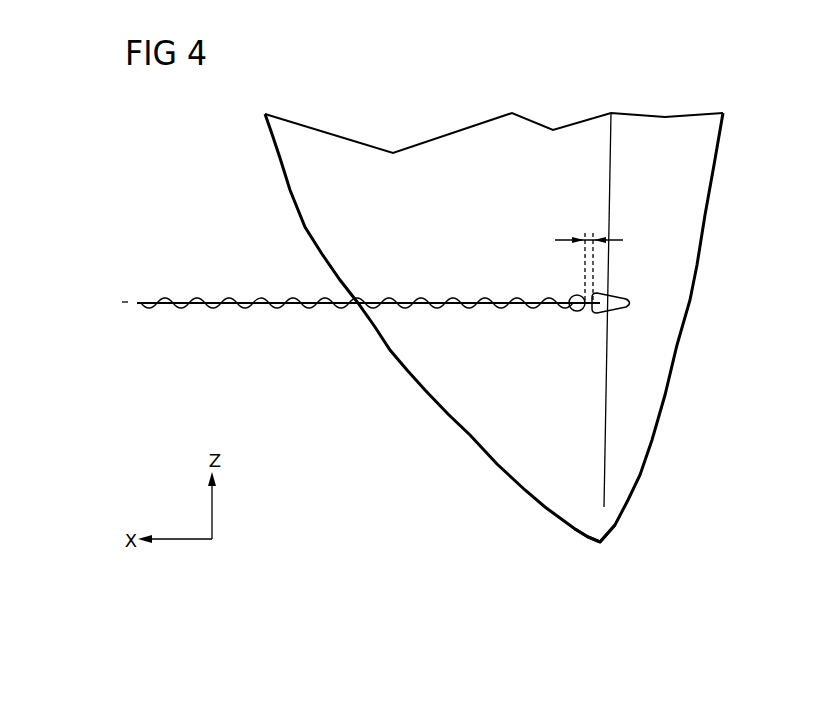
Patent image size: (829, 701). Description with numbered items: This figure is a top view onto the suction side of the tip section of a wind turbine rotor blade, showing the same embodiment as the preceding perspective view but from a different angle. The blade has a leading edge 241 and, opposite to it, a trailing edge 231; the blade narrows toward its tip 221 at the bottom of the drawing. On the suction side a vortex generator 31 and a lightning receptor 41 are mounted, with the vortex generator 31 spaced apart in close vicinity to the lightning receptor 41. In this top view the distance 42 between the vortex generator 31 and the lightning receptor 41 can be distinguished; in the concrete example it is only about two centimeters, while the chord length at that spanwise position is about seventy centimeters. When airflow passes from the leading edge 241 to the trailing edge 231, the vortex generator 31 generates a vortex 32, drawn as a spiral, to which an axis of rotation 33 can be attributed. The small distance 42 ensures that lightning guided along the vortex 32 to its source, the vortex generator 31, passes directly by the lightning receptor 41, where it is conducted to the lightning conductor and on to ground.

The trailing edge 231 is at (290, 192).
The leading edge 241 is at (698, 272).
The blade tip 221 is at (600, 545).
The vortex 32 is at (280, 307).
The axis of rotation 33 is at (315, 300).
The lightning receptor 41 is at (570, 297).
The vortex generator 31 is at (623, 295).
The distance 42 is at (590, 238).